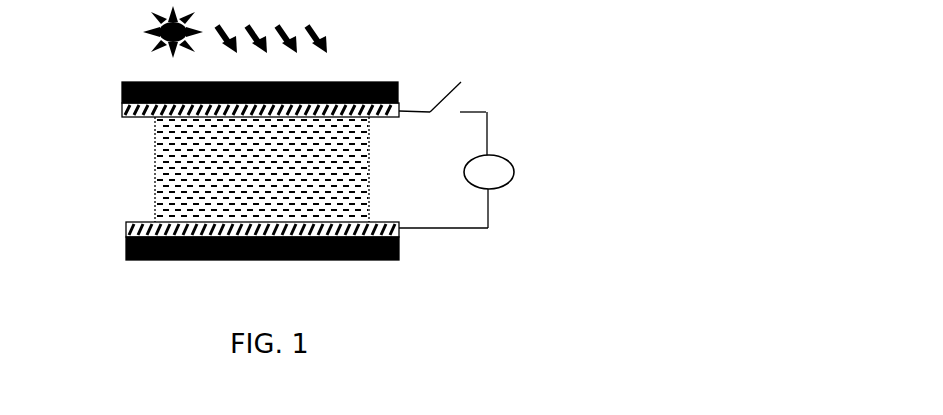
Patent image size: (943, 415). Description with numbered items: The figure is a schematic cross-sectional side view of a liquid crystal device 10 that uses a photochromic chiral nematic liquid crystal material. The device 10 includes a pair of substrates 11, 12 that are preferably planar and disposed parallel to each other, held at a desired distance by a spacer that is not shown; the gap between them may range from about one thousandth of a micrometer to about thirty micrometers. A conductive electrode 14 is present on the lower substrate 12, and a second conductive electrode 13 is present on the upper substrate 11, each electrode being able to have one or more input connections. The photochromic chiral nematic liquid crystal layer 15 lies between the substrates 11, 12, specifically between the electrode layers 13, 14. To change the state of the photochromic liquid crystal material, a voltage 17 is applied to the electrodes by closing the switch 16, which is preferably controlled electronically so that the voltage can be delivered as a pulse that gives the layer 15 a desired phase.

The liquid crystal device 10 is at (423, 65).
The substrate 11 is at (115, 78).
The substrate 12 is at (118, 252).
The second conductive electrode 13 is at (112, 111).
The conductive electrode 14 is at (116, 229).
The photochromic chiral nematic liquid crystal layer 15 is at (145, 170).
The switch 16 is at (470, 91).
The voltage 17 is at (524, 172).